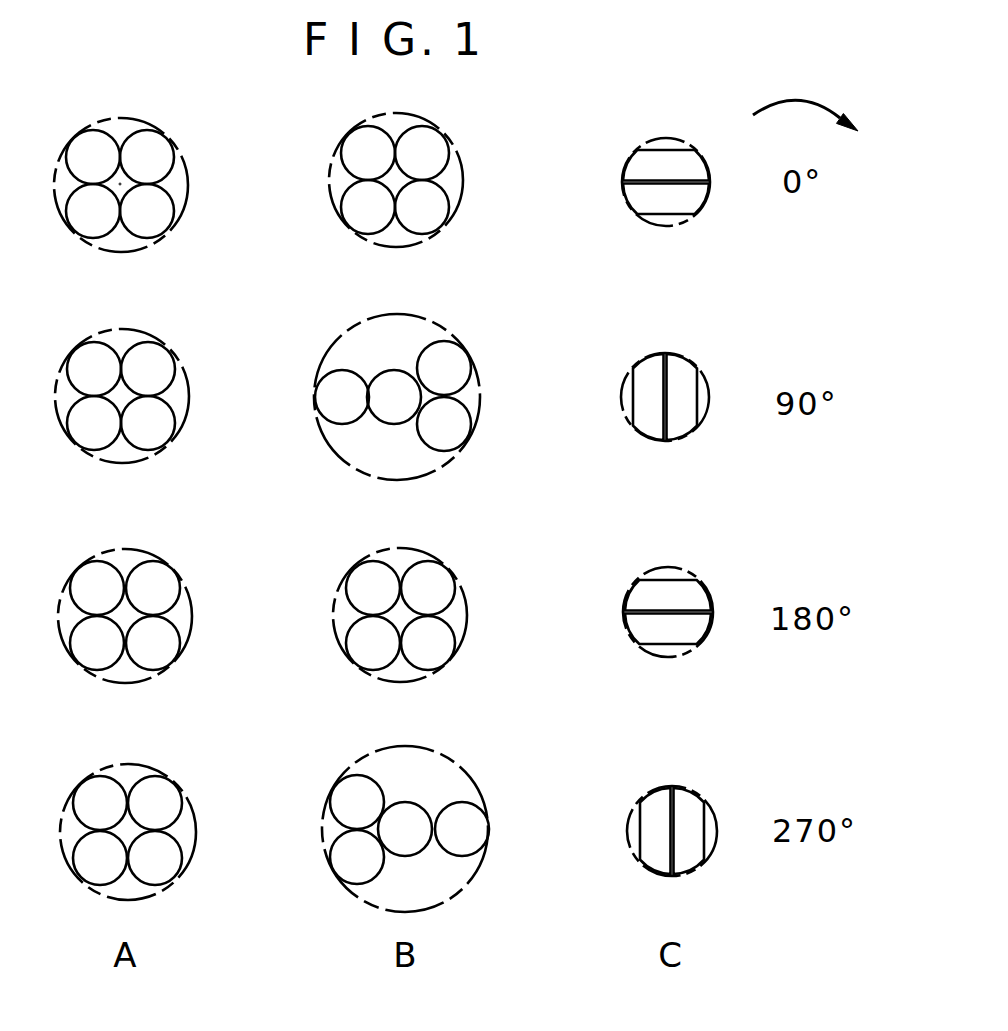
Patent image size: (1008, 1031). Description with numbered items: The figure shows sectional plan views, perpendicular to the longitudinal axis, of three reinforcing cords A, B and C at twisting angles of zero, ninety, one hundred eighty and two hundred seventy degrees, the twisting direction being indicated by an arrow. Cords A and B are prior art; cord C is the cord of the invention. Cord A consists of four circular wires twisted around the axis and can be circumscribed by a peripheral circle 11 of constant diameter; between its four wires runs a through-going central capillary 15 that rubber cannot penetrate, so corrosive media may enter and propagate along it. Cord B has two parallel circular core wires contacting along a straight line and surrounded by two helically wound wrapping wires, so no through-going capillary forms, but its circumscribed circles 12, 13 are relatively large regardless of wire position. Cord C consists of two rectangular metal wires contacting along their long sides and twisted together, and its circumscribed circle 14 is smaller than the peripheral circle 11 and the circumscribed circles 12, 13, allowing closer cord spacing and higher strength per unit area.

The peripheral circle 11 is at (182, 170).
The circumscribed circle 12 is at (453, 152).
The circumscribed circle 13 is at (442, 328).
The circumscribed circle 14 is at (642, 143).
The capillary 15 is at (120, 183).